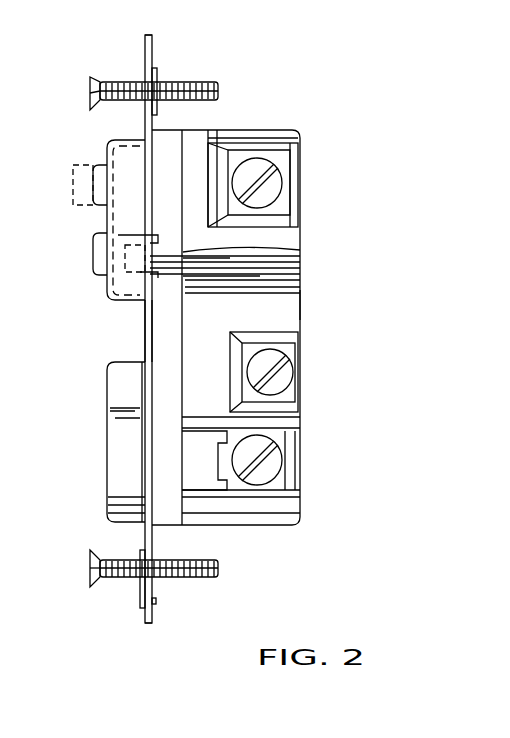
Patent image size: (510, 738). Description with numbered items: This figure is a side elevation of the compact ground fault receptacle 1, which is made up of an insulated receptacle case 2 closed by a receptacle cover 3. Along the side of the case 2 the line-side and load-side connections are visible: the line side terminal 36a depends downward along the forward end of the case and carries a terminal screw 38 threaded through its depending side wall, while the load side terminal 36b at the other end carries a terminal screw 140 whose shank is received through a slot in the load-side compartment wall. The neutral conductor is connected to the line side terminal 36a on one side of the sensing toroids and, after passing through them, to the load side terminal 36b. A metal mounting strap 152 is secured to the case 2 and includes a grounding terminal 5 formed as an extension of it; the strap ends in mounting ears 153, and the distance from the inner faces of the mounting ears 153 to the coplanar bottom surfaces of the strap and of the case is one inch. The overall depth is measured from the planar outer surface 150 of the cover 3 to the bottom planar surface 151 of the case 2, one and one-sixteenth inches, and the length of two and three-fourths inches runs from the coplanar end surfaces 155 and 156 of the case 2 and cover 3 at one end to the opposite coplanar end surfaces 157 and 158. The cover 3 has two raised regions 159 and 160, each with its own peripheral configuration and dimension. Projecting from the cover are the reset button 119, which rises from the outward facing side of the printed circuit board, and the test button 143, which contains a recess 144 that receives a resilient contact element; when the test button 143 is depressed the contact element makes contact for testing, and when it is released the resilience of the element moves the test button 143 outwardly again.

The ground fault receptacle 1 is at (267, 126).
The receptacle case 2 is at (290, 275).
The receptacle cover 3 is at (158, 343).
The grounding terminal 5 is at (285, 353).
The line side terminal 36a is at (278, 158).
The load side terminal 36b is at (280, 490).
The terminal screw 38 is at (268, 193).
The reset button 119 is at (97, 165).
The terminal screw 140 is at (270, 450).
The test button 143 is at (93, 247).
The recess 144 is at (300, 248).
The planar outer surface 150 is at (145, 320).
The bottom planar surface 151 is at (300, 303).
The mounting strap 152 is at (153, 42).
The mounting ears 153 is at (145, 33).
The end surface 155 is at (220, 132).
The end surface 156 is at (177, 132).
The end surface 157 is at (270, 530).
The end surface 158 is at (170, 530).
The raised region 159 is at (107, 140).
The raised region 160 is at (107, 462).